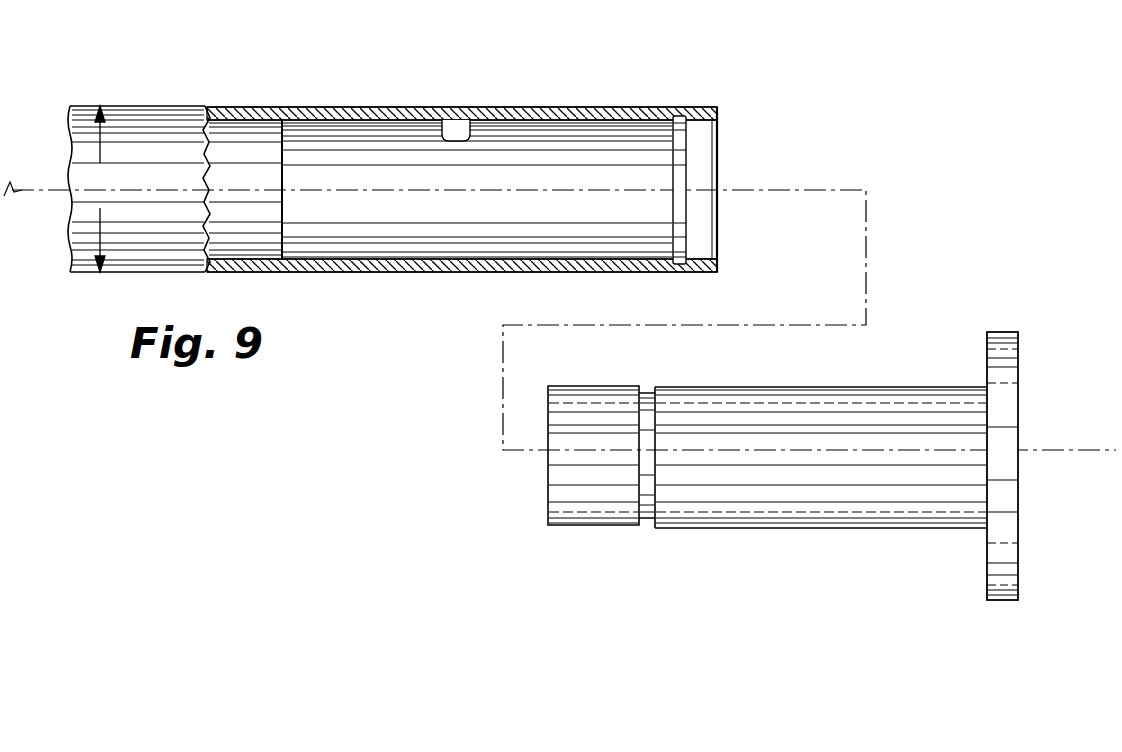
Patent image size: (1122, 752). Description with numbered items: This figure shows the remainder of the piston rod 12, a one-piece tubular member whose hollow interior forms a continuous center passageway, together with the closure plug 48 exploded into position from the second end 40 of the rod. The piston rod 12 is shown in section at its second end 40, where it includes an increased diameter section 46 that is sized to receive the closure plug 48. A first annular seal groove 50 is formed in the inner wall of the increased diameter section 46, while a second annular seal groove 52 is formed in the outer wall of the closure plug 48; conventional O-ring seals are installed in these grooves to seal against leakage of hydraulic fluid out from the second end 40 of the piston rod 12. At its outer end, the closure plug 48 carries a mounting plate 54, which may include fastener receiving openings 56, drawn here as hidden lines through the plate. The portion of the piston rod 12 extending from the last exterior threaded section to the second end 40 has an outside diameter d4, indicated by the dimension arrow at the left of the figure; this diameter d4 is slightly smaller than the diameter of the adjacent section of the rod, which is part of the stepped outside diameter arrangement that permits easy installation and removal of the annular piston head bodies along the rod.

The piston rod 12 is at (330, 107).
The second end 40 is at (718, 100).
The increased diameter section 46 is at (470, 130).
The first annular seal groove 50 is at (678, 142).
The closure plug 48 is at (770, 538).
The second annular seal groove 52 is at (646, 528).
The mounting plate 54 is at (1005, 400).
The fastener receiving openings 56 is at (987, 367).
The outside diameter d-4 d4 is at (104, 178).